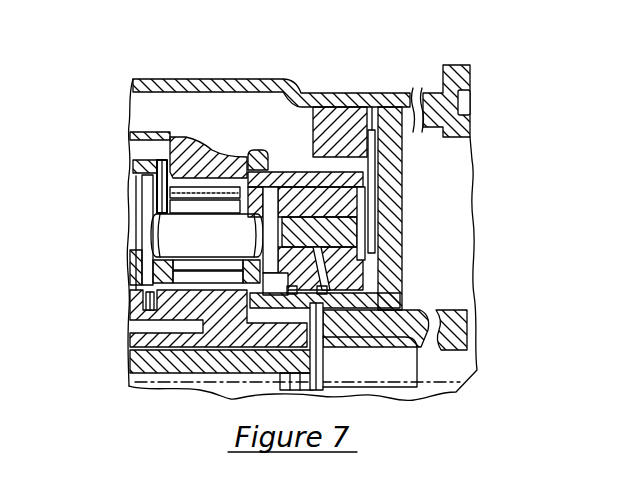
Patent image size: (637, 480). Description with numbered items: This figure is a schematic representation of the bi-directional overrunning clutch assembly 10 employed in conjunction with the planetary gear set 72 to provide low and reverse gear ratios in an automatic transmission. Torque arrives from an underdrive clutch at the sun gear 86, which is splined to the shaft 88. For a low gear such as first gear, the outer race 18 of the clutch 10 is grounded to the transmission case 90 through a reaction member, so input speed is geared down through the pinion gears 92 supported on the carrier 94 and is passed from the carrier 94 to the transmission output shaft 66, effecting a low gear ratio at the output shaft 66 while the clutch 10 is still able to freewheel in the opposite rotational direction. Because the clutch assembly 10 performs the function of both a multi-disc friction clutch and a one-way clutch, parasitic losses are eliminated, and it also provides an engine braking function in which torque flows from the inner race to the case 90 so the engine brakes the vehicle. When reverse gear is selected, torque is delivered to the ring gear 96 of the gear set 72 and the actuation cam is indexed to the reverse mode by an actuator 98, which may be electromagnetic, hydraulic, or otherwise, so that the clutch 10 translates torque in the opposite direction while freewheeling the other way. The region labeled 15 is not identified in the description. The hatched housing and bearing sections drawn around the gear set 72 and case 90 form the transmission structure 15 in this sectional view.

The bi-directional overrunning clutch assembly 10 is at (423, 227).
The housing wall 15 is at (412, 256).
The outer race 18 is at (350, 182).
The transmission output shaft 66 is at (433, 310).
The planetary gear set 72 is at (118, 115).
The sun gear 86 is at (173, 313).
The shaft 88 is at (160, 365).
The transmission case 90 is at (242, 80).
The pinion gears 92 is at (150, 173).
The carrier 94 is at (150, 200).
The ring gear 96 is at (170, 212).
The actuator 98 is at (340, 125).